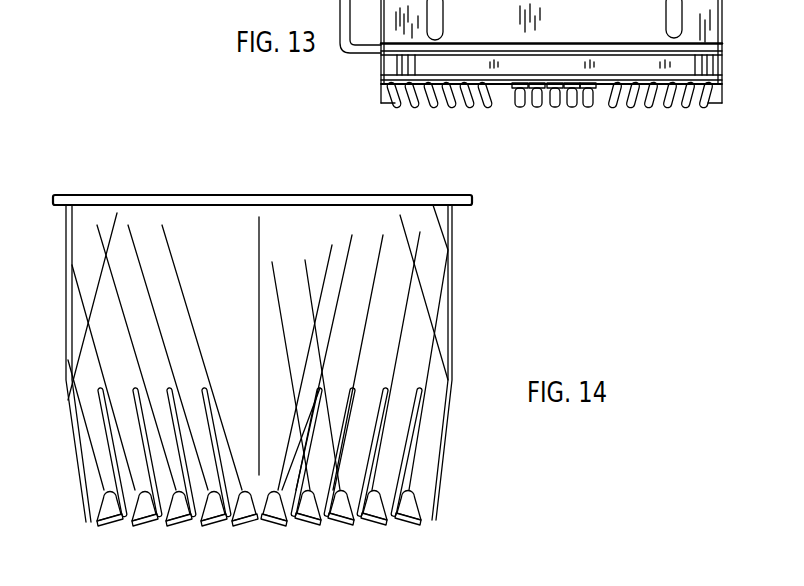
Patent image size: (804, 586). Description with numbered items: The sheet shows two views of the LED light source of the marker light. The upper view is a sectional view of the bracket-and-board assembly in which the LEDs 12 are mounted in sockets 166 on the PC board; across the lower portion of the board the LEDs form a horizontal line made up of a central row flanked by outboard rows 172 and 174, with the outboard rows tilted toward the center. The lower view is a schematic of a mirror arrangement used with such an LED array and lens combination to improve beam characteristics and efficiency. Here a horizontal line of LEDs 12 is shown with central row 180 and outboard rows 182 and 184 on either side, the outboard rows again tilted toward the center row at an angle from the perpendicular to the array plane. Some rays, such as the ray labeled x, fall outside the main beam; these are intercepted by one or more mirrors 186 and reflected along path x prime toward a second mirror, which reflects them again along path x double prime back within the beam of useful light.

In FIG. 13, the LEDs 12 is at (553, 107).
In FIG. 14, the LEDs 12 is at (414, 506).
In FIG. 13, the sockets 166 is at (449, 83).
In FIG. 13, the outboard row of LEDs 172 is at (444, 84).
In FIG. 13, the outboard row of LEDs 174 is at (713, 125).
In FIG. 14, the central row 180 is at (285, 538).
In FIG. 14, the outboard row 182 is at (220, 538).
In FIG. 14, the outboard row 184 is at (375, 464).
In FIG. 14, the mirrors 186 is at (383, 392).